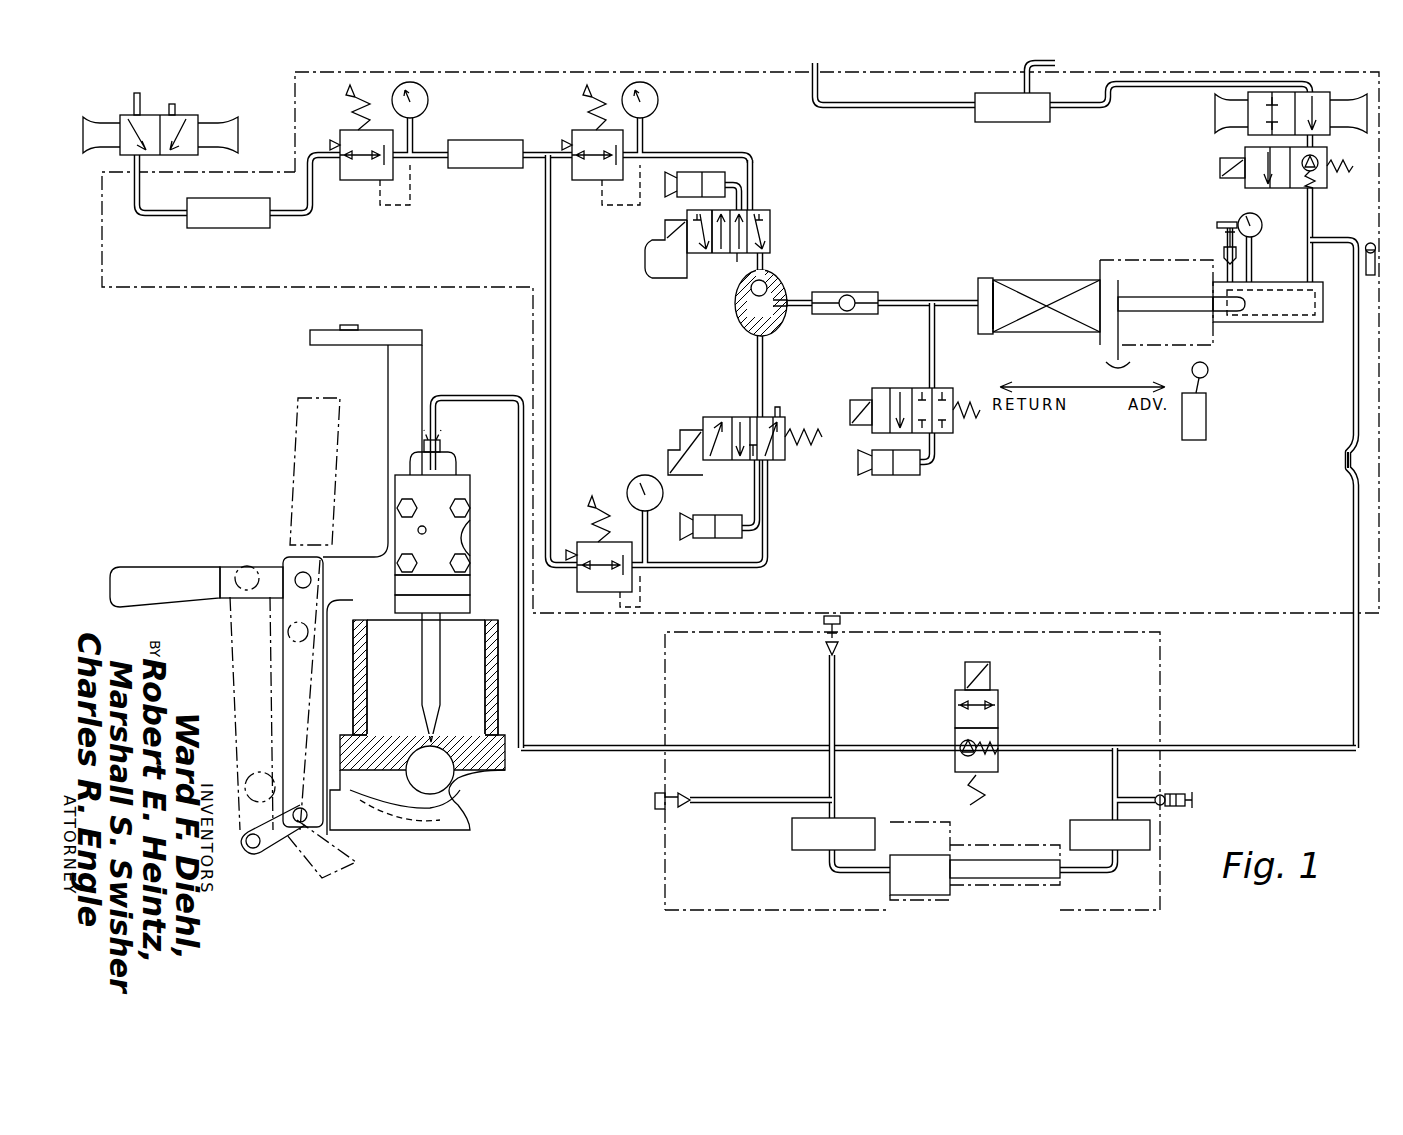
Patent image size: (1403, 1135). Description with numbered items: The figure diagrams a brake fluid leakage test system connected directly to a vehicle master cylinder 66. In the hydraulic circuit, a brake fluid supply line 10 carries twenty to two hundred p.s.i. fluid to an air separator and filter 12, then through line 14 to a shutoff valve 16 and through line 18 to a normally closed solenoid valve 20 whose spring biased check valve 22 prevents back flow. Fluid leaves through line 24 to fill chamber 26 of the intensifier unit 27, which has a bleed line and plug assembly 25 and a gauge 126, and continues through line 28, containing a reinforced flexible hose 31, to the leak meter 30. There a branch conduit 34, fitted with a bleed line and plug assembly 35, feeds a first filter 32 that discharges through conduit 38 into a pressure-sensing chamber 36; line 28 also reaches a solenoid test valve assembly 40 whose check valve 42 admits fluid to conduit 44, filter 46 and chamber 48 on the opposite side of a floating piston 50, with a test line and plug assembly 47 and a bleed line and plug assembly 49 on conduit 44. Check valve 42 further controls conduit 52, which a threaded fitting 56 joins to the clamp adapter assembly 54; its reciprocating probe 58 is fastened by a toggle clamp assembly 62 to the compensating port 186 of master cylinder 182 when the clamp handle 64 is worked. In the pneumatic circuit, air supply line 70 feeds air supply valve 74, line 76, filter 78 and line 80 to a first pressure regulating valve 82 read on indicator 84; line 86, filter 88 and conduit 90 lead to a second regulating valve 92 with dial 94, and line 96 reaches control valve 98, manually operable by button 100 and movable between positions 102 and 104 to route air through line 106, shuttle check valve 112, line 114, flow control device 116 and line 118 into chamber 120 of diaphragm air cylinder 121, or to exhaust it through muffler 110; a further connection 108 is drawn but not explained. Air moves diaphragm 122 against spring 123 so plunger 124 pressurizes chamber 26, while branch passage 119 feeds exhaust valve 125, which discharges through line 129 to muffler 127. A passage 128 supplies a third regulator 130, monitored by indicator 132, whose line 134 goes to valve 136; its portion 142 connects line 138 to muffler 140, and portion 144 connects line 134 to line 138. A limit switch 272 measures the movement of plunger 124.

The brake fluid supply line 10 is at (882, 110).
The air separator and filter 12 is at (1010, 122).
The line 14 is at (1142, 88).
The shutoff valve 16 is at (1255, 126).
The line 18 is at (1325, 136).
The solenoid actuated valve 20 is at (1250, 184).
The spring biased check valve 22 is at (1302, 172).
The line 24 is at (1313, 224).
The bleed line and plug assembly 25 is at (1217, 226).
The intensifier chamber 26 is at (1270, 322).
The intensifier unit 27 is at (1087, 346).
The line 28 is at (1352, 372).
The leak meter 30 is at (1135, 686).
The reinforced flexible connecting hose 31 is at (1345, 480).
The first filter 32 is at (1150, 834).
The branch conduit 34 is at (1112, 762).
The bleed line and plug assembly 35 is at (1175, 792).
The pressure-sensing chamber 36 is at (1048, 817).
The conduit 38 is at (1102, 872).
The test valve assembly 40 is at (1000, 696).
The check valve 42 is at (990, 746).
The conduit 44 is at (862, 745).
The filter 46 is at (862, 818).
The test line and plug assembly 47 is at (842, 630).
The chamber 48 is at (920, 875).
The bleed line and plug assembly 49 is at (655, 803).
The floating piston 50 is at (1005, 888).
The conduit 52 is at (582, 744).
The clamp adapter assembly 54 is at (462, 488).
The threaded fitting 56 is at (440, 446).
The probe 58 is at (420, 633).
The toggle clamp assembly 62 is at (318, 568).
The clamp handle 64 is at (165, 575).
The master cylinder 66 is at (490, 790).
The air supply line 70 is at (145, 94).
The air supply valve 74 is at (195, 116).
The line 76 is at (157, 224).
The filter 78 is at (222, 228).
The line 80 is at (306, 222).
The first pressure regulating valve 82 is at (368, 178).
The indicator 84 is at (430, 96).
The line 86 is at (428, 164).
The filter 88 is at (496, 168).
The conduit 90 is at (537, 150).
The second pressure regulating valve 92 is at (590, 178).
The dial 94 is at (658, 98).
The line 96 is at (702, 152).
The control valve 98 is at (784, 232).
The button 100 is at (672, 262).
The valve position 102 is at (714, 253).
The valve position 104 is at (753, 210).
The line 106 is at (766, 266).
The conduit 108 is at (742, 182).
The muffler 110 is at (676, 191).
The shuttle check valve 112 is at (745, 312).
The line 114 is at (798, 300).
The flow control device 116 is at (868, 290).
The line 118 is at (918, 300).
The branch passage 119 is at (928, 350).
The chamber 120 is at (986, 276).
The diaphragm air cylinder 121 is at (1050, 268).
The diaphragm 122 is at (1000, 280).
The spring 123 is at (1088, 280).
The plunger 124 is at (1165, 312).
The exhaust valve 125 is at (942, 392).
The gauge 126 is at (1256, 238).
The muffler 127 is at (890, 477).
The passage 128 is at (552, 340).
The line 129 is at (942, 462).
The third pressure regulator 130 is at (598, 602).
The indicator 132 is at (636, 484).
The line 134 is at (688, 568).
The valve 136 is at (700, 438).
The line 138 is at (766, 340).
The muffler 140 is at (702, 515).
The valve portion 142 is at (785, 427).
The valve portion 144 is at (728, 417).
The master cylinder 182 is at (498, 690).
The compensating port 186 is at (433, 746).
The limit switch 272 is at (1208, 428).